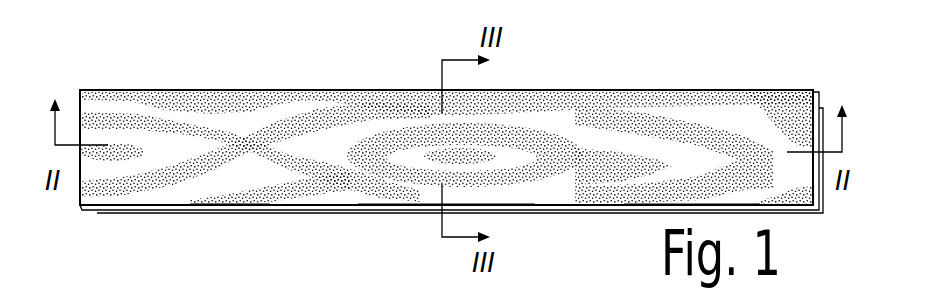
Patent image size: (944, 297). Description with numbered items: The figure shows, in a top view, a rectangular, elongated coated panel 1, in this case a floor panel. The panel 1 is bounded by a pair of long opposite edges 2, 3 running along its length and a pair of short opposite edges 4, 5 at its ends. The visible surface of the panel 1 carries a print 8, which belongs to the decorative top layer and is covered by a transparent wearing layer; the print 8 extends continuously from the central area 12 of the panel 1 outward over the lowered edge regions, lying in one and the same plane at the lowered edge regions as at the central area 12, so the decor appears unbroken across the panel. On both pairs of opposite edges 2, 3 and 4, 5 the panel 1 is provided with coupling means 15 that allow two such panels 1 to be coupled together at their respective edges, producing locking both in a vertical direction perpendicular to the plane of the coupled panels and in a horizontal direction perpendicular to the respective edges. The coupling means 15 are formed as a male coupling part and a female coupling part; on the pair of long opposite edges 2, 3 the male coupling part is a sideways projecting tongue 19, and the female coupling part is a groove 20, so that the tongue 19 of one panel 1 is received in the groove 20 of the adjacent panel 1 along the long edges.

The coated panel 1 is at (637, 82).
The long opposite edge 2 is at (509, 90).
The long opposite edge 3 is at (595, 213).
The short opposite edge 4 is at (80, 195).
The short opposite edge 5 is at (824, 197).
The print 8 is at (517, 133).
The central area 12 is at (372, 128).
The coupling means 15 is at (73, 78).
The tongue 19 is at (172, 90).
The groove 20 is at (80, 209).